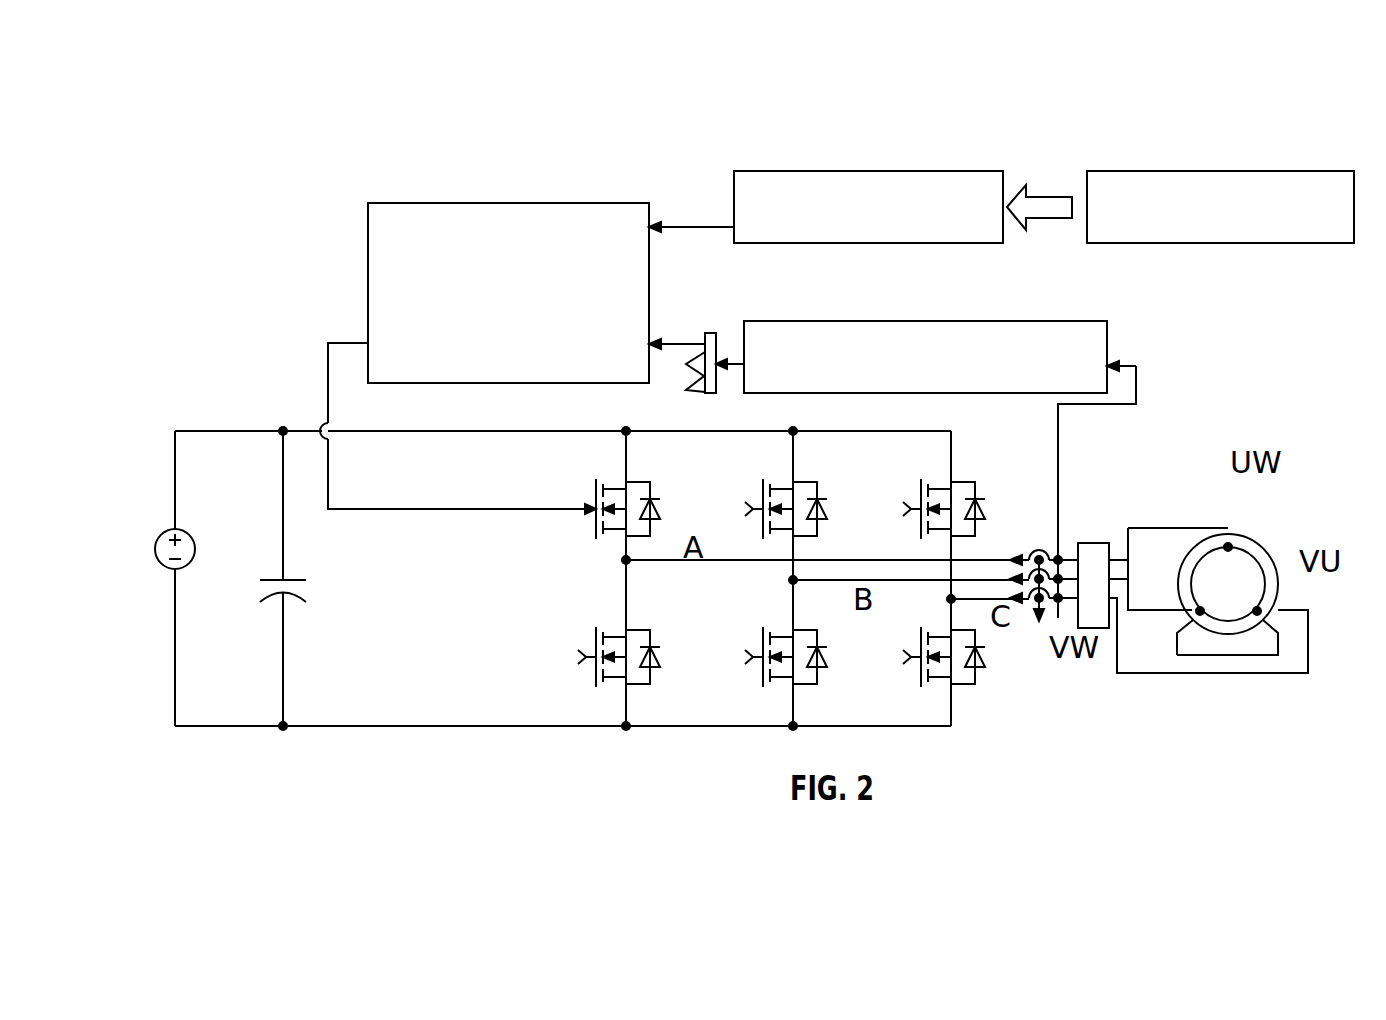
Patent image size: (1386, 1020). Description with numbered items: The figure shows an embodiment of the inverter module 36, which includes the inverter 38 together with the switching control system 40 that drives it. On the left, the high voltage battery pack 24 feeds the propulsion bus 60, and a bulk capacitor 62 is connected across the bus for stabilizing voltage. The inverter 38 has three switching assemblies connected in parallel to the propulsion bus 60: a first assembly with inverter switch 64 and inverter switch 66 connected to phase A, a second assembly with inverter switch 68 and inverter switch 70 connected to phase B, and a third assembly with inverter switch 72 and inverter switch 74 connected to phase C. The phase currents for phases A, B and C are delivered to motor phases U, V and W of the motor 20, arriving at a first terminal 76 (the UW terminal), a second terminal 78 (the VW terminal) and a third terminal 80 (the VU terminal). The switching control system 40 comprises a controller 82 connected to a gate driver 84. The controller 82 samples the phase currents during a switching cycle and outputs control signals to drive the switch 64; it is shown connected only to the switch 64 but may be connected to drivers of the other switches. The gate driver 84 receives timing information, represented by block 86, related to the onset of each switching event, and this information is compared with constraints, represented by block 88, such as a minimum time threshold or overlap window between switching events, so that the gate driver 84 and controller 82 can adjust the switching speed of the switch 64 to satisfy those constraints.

The motor 20 is at (1233, 568).
The high voltage battery pack 24 is at (175, 530).
The inverter module 36 is at (364, 100).
The inverter 38 is at (592, 758).
The switching control system 40 is at (678, 165).
The propulsion bus 60 is at (308, 428).
The bulk capacitor 62 is at (290, 597).
The inverter switch 64 is at (652, 500).
The inverter switch 66 is at (622, 631).
The inverter switch 68 is at (819, 502).
The inverter switch 70 is at (788, 631).
The inverter switch 72 is at (946, 487).
The inverter switch 74 is at (940, 682).
The first terminal 76 is at (1229, 546).
The second terminal 78 is at (1199, 612).
The third terminal 80 is at (1258, 610).
The controller 82 is at (1037, 321).
The gate driver 84 is at (452, 203).
The timing information 86 is at (1220, 171).
The constraints 88 is at (898, 171).